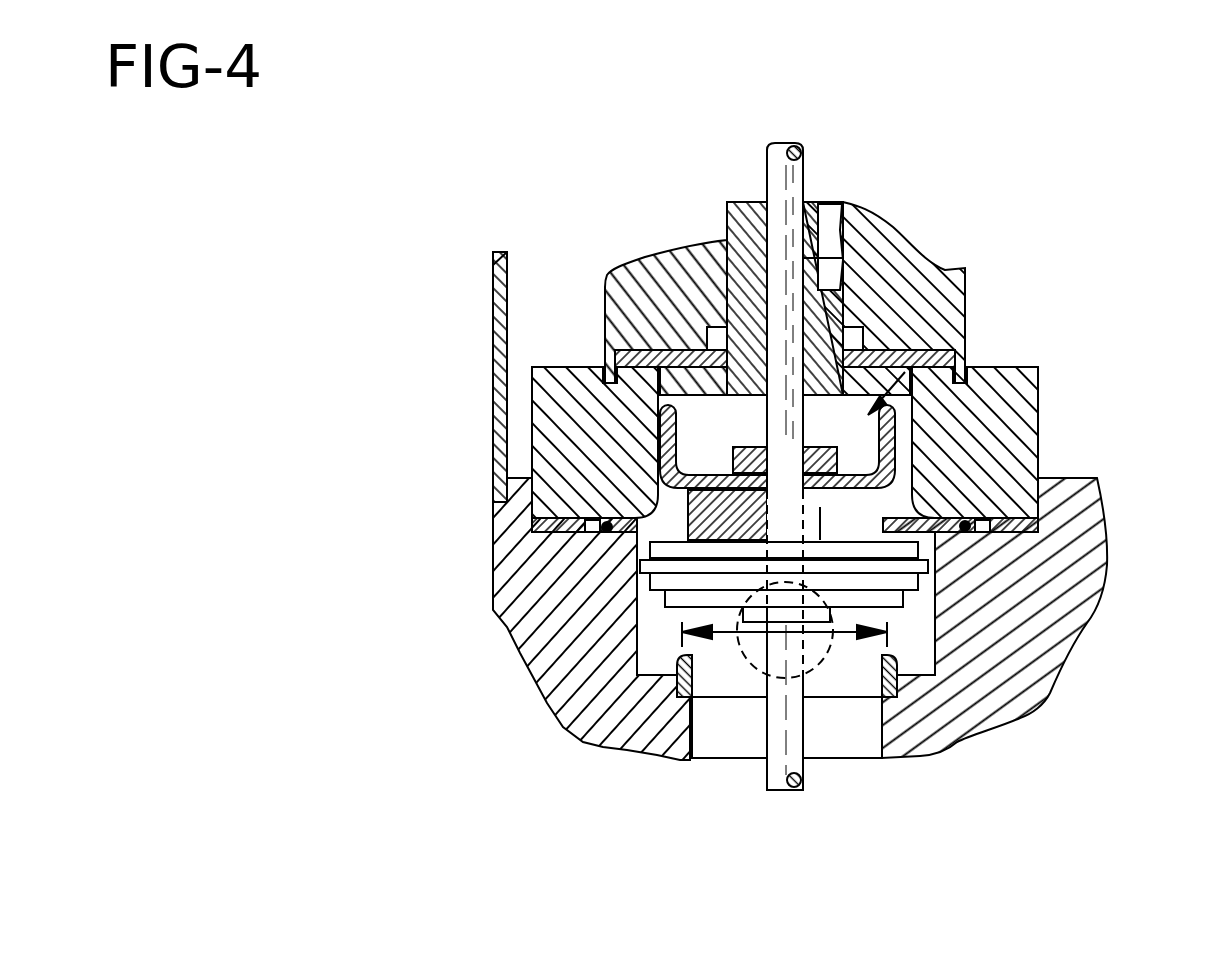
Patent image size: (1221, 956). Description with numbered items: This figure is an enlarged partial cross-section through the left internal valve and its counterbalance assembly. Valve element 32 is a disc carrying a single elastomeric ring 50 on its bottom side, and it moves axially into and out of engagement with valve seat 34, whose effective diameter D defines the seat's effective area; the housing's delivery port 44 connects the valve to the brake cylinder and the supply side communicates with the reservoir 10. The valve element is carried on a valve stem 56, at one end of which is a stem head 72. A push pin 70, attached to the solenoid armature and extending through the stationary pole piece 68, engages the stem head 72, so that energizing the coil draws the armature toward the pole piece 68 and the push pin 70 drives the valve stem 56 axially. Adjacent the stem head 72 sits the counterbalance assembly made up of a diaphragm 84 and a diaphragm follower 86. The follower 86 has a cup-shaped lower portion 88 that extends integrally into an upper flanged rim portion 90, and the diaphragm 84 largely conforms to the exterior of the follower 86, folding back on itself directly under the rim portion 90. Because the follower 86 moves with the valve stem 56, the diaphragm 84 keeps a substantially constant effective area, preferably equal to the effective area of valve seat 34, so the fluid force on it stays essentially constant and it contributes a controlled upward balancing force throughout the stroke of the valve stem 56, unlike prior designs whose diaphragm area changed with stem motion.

The reservoir 10 is at (897, 503).
The valve element 32 is at (640, 543).
The valve seat 34 is at (720, 667).
The delivery port 44 is at (813, 665).
The elastomeric ring 50 is at (888, 678).
The valve stem 56 is at (775, 727).
The pole piece 68 is at (833, 310).
The push pin 70 is at (792, 178).
The stem head 72 is at (975, 415).
The diaphragm 84 is at (865, 515).
The diaphragm follower 86 is at (968, 385).
The cup-shaped lower portion 88 is at (727, 440).
The upper flanged rim portion 90 is at (640, 450).
The effective diameter D is at (880, 655).